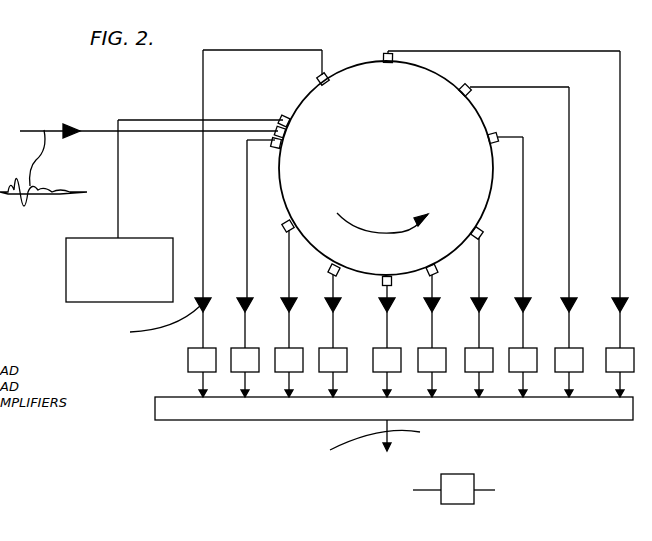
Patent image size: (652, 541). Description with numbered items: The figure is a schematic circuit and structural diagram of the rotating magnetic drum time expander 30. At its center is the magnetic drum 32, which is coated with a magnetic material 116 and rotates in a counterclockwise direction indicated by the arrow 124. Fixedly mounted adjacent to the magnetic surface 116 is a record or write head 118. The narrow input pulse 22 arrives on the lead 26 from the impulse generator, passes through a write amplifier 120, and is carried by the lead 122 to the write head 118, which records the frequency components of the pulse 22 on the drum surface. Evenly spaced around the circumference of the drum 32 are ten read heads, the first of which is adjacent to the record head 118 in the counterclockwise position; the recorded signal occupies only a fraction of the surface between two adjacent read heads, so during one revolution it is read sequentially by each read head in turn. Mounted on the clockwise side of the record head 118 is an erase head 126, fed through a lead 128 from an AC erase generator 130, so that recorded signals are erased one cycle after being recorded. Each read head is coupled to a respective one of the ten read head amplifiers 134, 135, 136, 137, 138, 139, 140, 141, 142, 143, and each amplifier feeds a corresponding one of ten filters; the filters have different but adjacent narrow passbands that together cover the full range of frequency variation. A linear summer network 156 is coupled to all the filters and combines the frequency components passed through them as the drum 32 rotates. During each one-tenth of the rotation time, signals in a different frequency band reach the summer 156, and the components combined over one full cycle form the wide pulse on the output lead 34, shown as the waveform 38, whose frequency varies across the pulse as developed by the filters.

The pulse waveform 22 is at (42, 205).
The lead 26 is at (38, 130).
The rotating magnetic drum time expander 30 is at (445, 155).
The magnetic drum 32 is at (462, 131).
The lead 34 is at (428, 489).
The waveform 38 is at (450, 505).
The magnetic material 116 is at (403, 166).
The write head 118 is at (285, 133).
The write amplifier 120 is at (78, 128).
The lead 122 is at (160, 133).
The arrow 124 is at (402, 230).
The erase head 126 is at (289, 122).
The lead 128 is at (120, 207).
The AC erase generator 130 is at (68, 288).
The read head amplifier 134 is at (240, 306).
The read head amplifier 135 is at (284, 306).
The read head amplifier 136 is at (328, 306).
The read head amplifier 137 is at (382, 306).
The read head amplifier 138 is at (428, 306).
The read head amplifier 139 is at (475, 306).
The read head amplifier 140 is at (519, 306).
The read head amplifier 141 is at (564, 306).
The read head amplifier 142 is at (614, 306).
The read head amplifier 143 is at (203, 300).
The linear summer network 156 is at (612, 412).